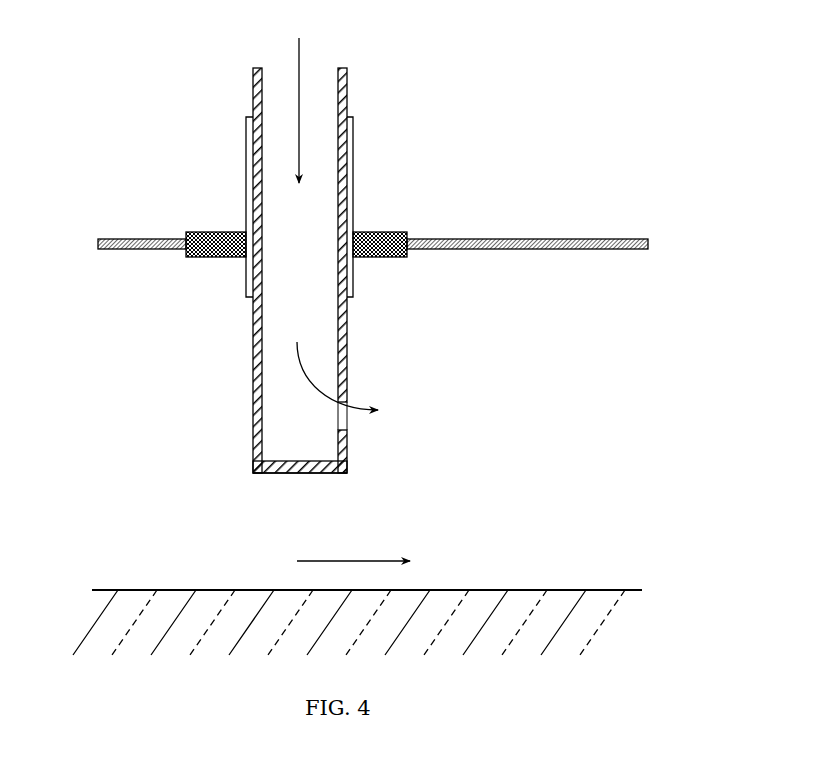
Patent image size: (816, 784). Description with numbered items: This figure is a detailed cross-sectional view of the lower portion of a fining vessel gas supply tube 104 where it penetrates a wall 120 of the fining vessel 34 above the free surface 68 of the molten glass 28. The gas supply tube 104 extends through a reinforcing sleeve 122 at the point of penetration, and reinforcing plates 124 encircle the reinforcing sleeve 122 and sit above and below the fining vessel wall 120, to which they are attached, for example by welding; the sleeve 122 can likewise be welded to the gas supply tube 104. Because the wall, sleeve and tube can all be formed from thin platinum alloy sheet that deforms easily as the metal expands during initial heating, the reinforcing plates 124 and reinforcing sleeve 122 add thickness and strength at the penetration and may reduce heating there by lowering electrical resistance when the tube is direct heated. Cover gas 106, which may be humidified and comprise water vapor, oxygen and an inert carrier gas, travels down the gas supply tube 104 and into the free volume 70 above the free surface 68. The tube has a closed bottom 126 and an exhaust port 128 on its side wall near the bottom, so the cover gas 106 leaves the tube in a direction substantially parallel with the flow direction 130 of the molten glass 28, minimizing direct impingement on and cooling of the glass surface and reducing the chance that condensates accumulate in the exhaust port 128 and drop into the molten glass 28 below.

The molten glass 28 is at (143, 578).
The fining vessel 34 is at (475, 230).
The free surface 68 is at (527, 590).
The free volume 70 is at (559, 334).
The fining vessel gas supply tube 104 is at (250, 78).
The cover gas 106 is at (300, 45).
The fining vessel wall 120 is at (563, 238).
The reinforcing sleeve 122 is at (245, 173).
The reinforcing plates 124 is at (383, 232).
The closed bottom 126 is at (290, 473).
The exhaust port 128 is at (348, 423).
The flow direction 130 is at (353, 574).